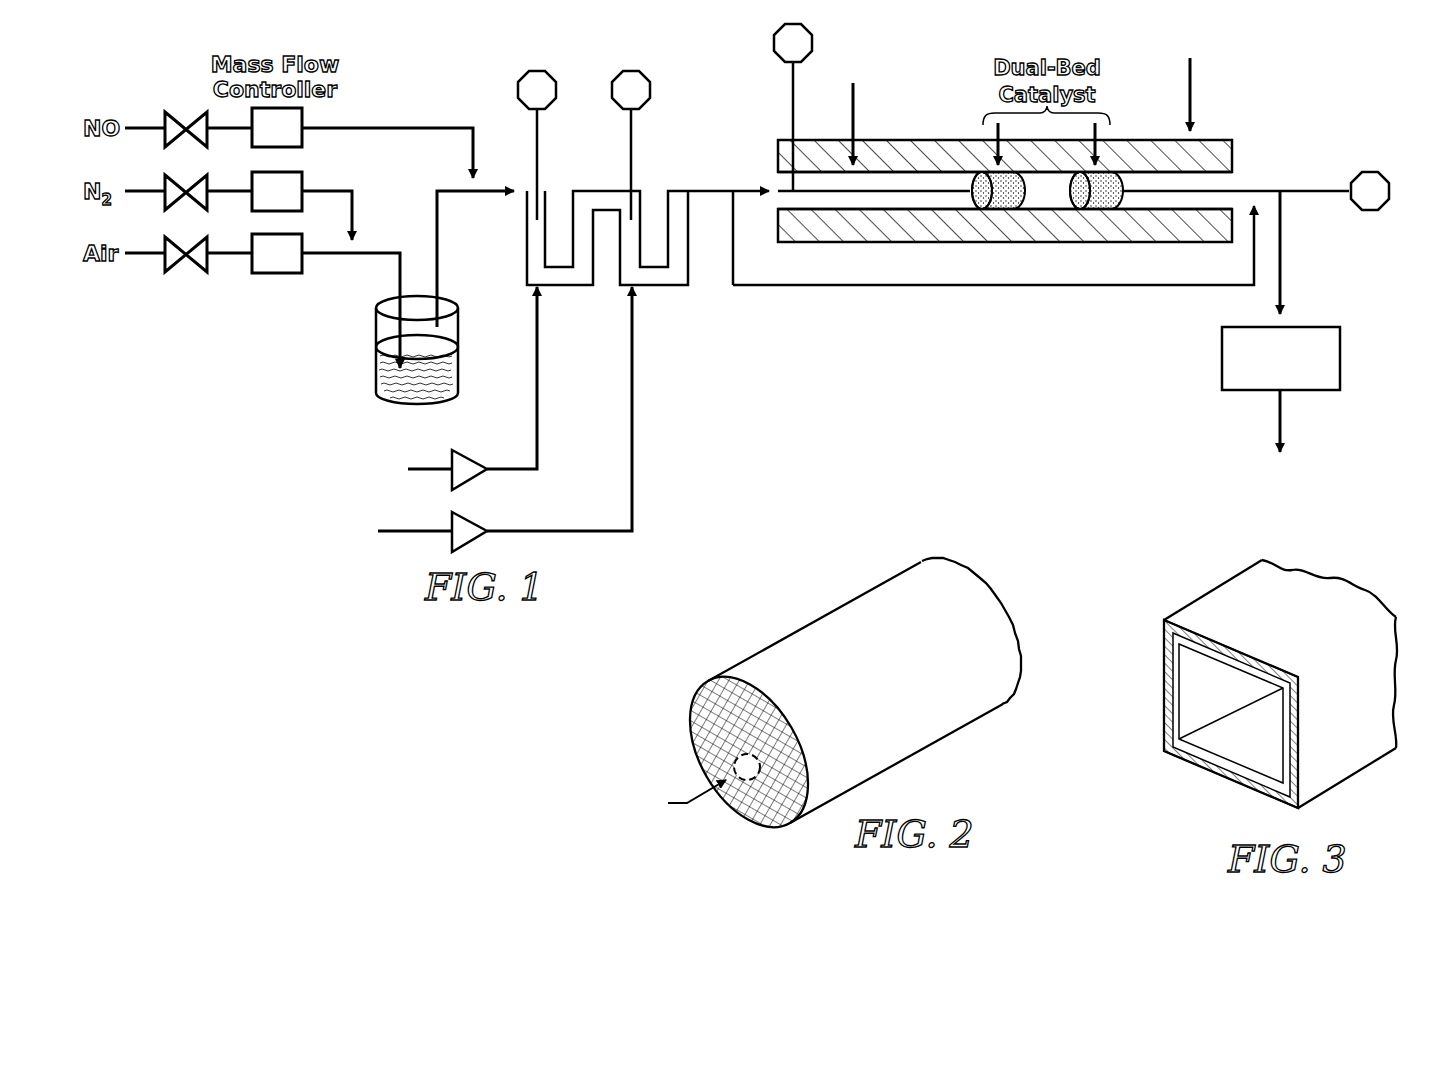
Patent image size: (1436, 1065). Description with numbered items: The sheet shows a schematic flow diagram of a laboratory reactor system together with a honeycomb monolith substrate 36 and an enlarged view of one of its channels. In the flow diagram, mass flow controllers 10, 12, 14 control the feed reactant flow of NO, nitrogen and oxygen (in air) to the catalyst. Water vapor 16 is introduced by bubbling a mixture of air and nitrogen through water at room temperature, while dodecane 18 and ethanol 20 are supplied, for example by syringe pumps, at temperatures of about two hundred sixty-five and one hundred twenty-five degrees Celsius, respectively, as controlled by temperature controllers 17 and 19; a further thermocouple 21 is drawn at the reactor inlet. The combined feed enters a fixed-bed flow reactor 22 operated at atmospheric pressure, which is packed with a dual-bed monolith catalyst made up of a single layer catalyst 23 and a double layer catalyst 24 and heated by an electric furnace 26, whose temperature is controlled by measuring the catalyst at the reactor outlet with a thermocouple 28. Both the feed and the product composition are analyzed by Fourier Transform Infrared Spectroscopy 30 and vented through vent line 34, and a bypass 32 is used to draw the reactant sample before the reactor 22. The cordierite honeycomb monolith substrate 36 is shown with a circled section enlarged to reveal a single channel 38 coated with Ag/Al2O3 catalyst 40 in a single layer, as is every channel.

In FIG. 1, the mass flow controller 10 is at (300, 117).
In FIG. 1, the mass flow controller 12 is at (300, 182).
In FIG. 1, the mass flow controller 14 is at (300, 247).
In FIG. 1, the water vapor 16 is at (437, 260).
In FIG. 1, the temperature controller 17 is at (536, 140).
In FIG. 1, the dodecane 18 is at (537, 378).
In FIG. 1, the temperature controller 19 is at (631, 167).
In FIG. 1, the ethanol 20 is at (632, 412).
In FIG. 1, the thermocouple 21 is at (793, 100).
In FIG. 1, the fixed-bed flow reactor 22 is at (853, 118).
In FIG. 1, the single layer catalyst 23 is at (998, 135).
In FIG. 1, the double layer catalyst 24 is at (1095, 133).
In FIG. 1, the electric furnace 26 is at (1190, 113).
In FIG. 1, the thermocouple 28 is at (1364, 184).
In FIG. 1, the Fourier Transform Infrared Spectroscopy 30 is at (1328, 342).
In FIG. 1, the bypass 32 is at (1085, 287).
In FIG. 1, the vent line 34 is at (1281, 407).
In FIG. 2, the cordierite honeycomb monolith substrate 36 is at (838, 628).
In FIG. 3, the cordierite honeycomb monolith substrate 36 is at (1199, 767).
In FIG. 3, the single channel 38 is at (1207, 682).
In FIG. 3, the Ag/Al2O3 catalyst 40 is at (1245, 774).